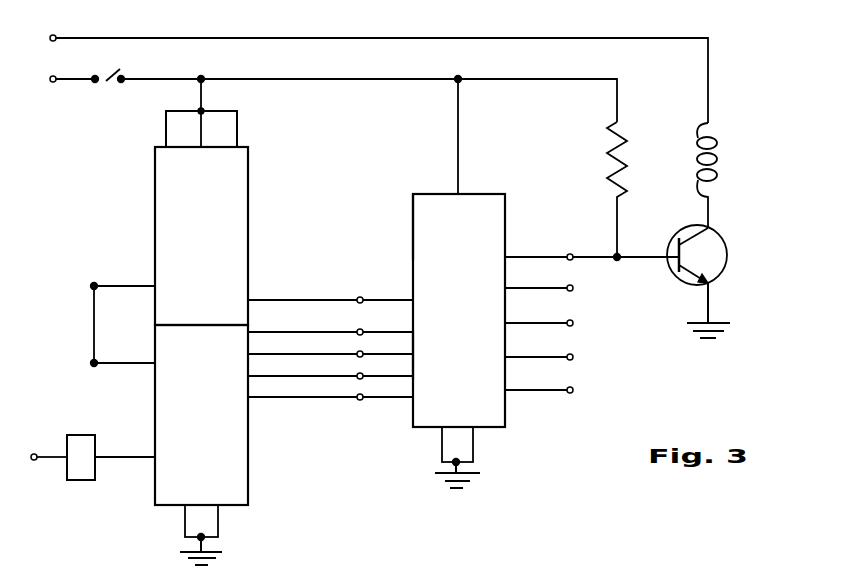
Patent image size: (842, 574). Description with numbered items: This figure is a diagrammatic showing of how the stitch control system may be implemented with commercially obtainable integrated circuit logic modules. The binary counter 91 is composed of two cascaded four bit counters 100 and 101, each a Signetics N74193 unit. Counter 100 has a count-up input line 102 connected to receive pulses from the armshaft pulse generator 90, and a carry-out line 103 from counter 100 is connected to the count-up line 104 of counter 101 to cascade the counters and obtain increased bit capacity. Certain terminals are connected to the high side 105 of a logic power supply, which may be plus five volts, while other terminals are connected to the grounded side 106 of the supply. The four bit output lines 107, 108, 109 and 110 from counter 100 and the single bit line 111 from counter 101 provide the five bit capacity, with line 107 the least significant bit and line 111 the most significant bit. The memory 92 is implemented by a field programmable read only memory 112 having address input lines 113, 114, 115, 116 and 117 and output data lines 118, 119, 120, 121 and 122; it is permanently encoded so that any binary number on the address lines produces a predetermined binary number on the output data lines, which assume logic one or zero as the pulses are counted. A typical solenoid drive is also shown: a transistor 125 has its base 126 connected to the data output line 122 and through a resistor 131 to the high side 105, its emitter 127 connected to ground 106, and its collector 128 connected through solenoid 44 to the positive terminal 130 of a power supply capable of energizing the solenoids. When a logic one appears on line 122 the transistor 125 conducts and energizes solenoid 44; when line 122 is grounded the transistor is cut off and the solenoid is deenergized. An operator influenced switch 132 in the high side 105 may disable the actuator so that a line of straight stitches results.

The positive terminal 130 is at (57, 35).
The operator influenced switch 132 is at (107, 82).
The high side of logic power supply 105 is at (312, 82).
The binary counter 91 is at (151, 188).
The four bit counter 101 is at (243, 221).
The four bit counter 100 is at (240, 463).
The count-up line 104 is at (120, 288).
The carry-out line 103 is at (110, 369).
The count-up input line 102 is at (124, 453).
The armshaft pulse generator 90 is at (78, 432).
The grounded side of power supply 106 is at (206, 545).
The bit output line 107 is at (300, 399).
The bit output line 108 is at (292, 378).
The bit output line 109 is at (288, 356).
The bit output line 110 is at (282, 334).
The single bit line 111 is at (283, 301).
The field programmable read only memory 112 is at (418, 216).
The address input line 113 is at (386, 400).
The address input line 114 is at (404, 375).
The address input line 115 is at (404, 352).
The address input line 116 is at (397, 331).
The address input line 117 is at (401, 298).
The memory 92 is at (493, 186).
The output data line 118 is at (549, 392).
The output data line 119 is at (551, 359).
The output data line 120 is at (549, 325).
The output data line 121 is at (551, 290).
The output data line 122 is at (535, 255).
The resistor 131 is at (612, 165).
The solenoid 44 is at (716, 143).
The transistor 125 is at (725, 238).
The base 126 is at (648, 259).
The emitter 127 is at (696, 271).
The collector 128 is at (695, 233).